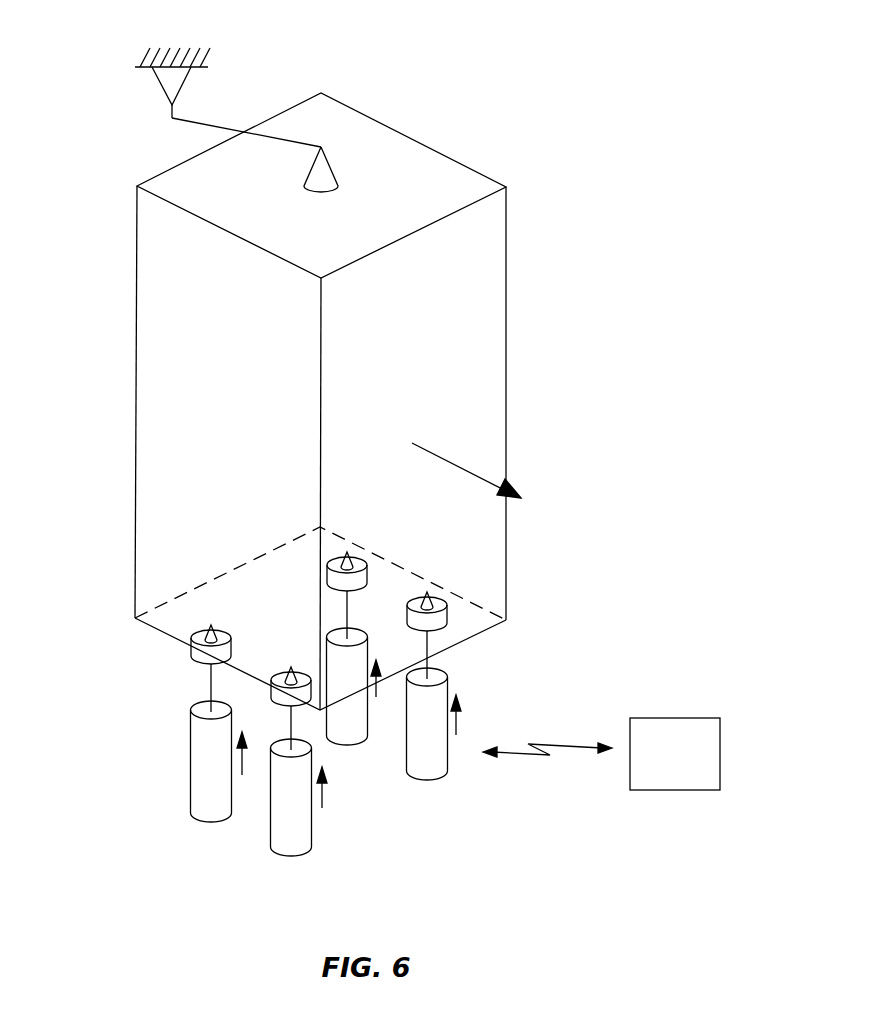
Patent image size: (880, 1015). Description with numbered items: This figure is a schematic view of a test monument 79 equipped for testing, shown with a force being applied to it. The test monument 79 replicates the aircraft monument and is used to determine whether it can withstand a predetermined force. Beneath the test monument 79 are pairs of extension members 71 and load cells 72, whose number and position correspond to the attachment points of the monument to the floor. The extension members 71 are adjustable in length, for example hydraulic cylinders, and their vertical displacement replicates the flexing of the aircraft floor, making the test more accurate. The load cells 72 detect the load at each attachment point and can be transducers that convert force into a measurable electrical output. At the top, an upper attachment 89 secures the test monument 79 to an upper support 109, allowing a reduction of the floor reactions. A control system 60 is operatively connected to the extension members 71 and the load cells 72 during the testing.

The upper support 109 is at (152, 53).
The upper attachment 89 is at (308, 118).
The test monument 79 is at (485, 313).
The load cells 72 is at (283, 703).
The extension members 71 is at (212, 787).
The control system 60 is at (675, 754).